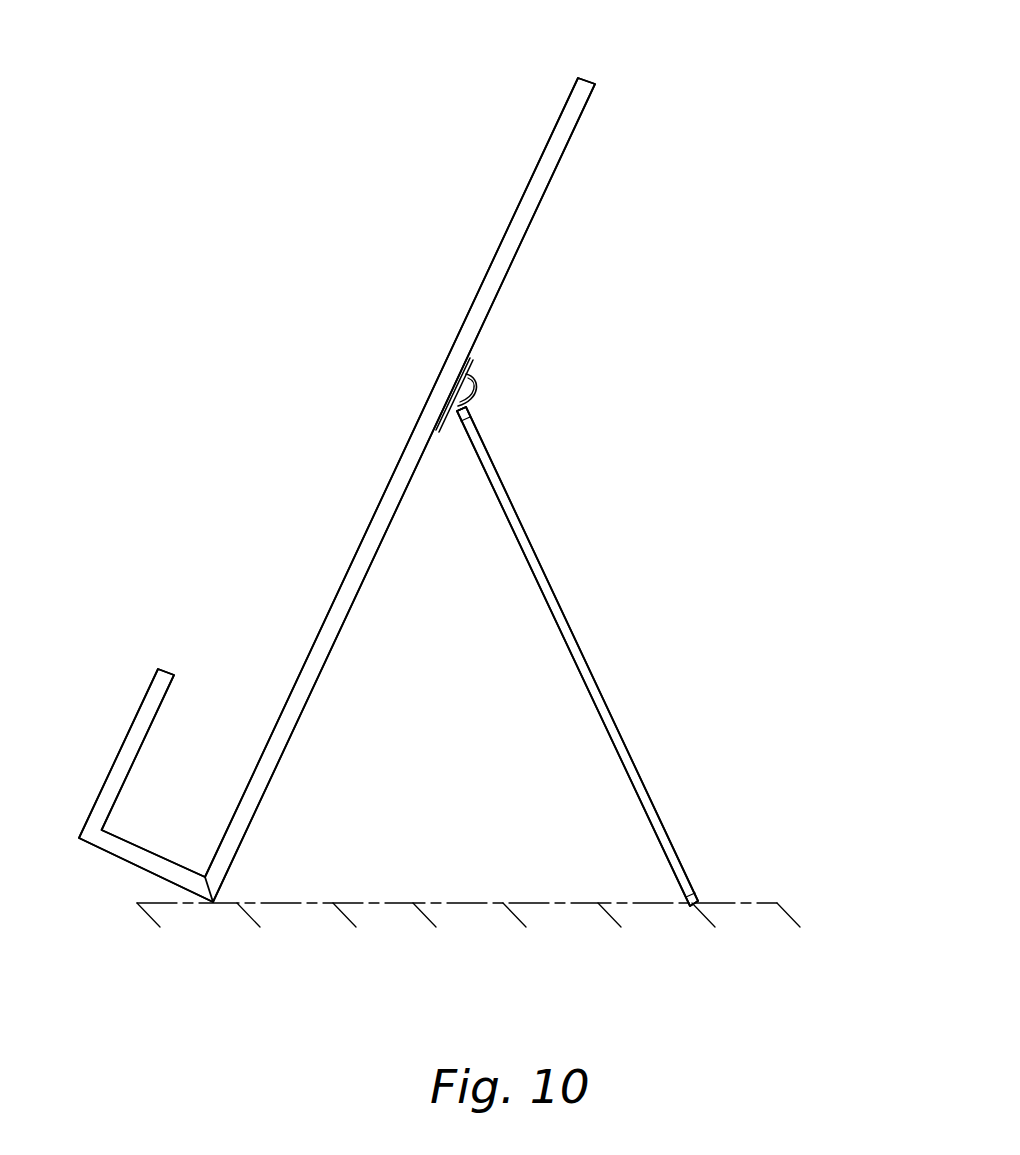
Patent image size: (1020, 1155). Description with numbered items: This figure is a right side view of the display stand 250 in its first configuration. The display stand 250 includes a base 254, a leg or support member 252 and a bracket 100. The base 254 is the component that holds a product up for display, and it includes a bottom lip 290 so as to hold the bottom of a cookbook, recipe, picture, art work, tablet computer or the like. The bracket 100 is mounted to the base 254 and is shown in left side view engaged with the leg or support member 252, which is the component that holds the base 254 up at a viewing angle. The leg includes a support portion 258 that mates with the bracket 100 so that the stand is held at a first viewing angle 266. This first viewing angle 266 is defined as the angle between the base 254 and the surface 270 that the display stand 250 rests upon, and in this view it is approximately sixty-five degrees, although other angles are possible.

The display stand 250 is at (428, 125).
The base 254 is at (498, 273).
The bottom lip 290 is at (118, 835).
The bracket 100 is at (477, 364).
The leg or support member 252 is at (558, 598).
The support portion 258 is at (570, 642).
The surface 270 is at (475, 903).
The first viewing angle 266 is at (373, 900).